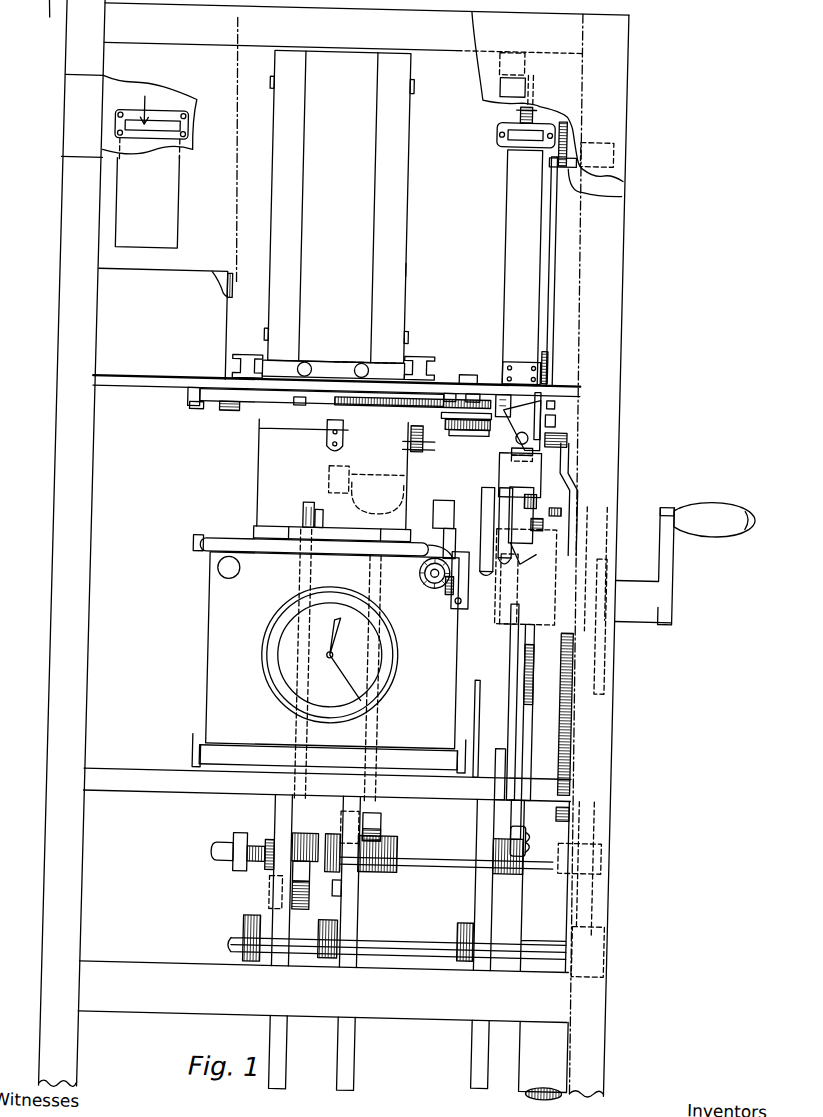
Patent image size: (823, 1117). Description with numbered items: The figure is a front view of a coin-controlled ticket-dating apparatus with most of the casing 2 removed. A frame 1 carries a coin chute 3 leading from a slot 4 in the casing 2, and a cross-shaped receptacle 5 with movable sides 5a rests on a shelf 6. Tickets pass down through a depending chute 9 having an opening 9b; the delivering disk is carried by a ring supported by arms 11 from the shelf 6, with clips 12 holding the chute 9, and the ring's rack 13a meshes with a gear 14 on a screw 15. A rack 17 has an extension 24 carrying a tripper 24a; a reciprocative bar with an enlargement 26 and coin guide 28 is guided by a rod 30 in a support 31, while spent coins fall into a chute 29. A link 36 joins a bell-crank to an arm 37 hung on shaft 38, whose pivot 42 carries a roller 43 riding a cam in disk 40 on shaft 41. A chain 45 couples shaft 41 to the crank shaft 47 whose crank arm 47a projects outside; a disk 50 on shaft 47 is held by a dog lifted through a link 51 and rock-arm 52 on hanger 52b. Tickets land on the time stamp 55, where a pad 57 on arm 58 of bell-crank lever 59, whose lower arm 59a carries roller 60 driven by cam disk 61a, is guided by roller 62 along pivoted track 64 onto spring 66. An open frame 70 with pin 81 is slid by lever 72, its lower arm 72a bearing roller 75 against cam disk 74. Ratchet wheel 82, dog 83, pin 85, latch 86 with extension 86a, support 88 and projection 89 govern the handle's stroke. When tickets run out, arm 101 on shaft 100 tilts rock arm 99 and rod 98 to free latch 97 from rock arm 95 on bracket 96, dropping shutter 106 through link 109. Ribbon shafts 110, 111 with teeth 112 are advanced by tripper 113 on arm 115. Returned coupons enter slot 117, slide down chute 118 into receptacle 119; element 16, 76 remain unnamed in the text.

The frame 1 is at (53, 243).
The casing 2 is at (624, 98).
The coin chute 3 is at (278, 193).
The slot 4 is at (500, 136).
The receptacle 5 is at (640, 382).
The movable side 5a is at (422, 268).
The shelf 6 is at (144, 393).
The guide or chute 9 is at (262, 482).
The opening 9b is at (329, 516).
The arms 11 is at (186, 404).
The clips 12 is at (346, 436).
The rack 13a is at (330, 396).
The gear 14 is at (448, 392).
The screw 15 is at (470, 392).
The lower rack 16 is at (480, 422).
The rack 17 is at (496, 434).
The extension 24 is at (541, 405).
The tripper 24a is at (556, 415).
The enlargement 26 is at (533, 445).
The guide 28 is at (533, 452).
The chute 29 is at (520, 475).
The extension or rod 30 is at (521, 425).
The support 31 is at (512, 407).
The link 36 is at (480, 720).
The arm 37 is at (522, 797).
The rod or shaft 38 is at (428, 857).
The disk 40 is at (483, 900).
The shaft 41 is at (390, 940).
The pivot 42 is at (532, 830).
The roller 43 is at (504, 872).
The chain 45 is at (536, 708).
The crank shaft 47 is at (642, 608).
The crank arm 47a is at (676, 540).
The disk 50 is at (578, 668).
The link 51 is at (575, 487).
The rock-arm 52 is at (562, 435).
The hanger 52b is at (549, 402).
The dating or time stamp 55 is at (332, 650).
The pad or hammer 57 is at (350, 496).
The arm 58 is at (327, 482).
The bell-crank lever 59 is at (381, 722).
The lower arm 59a is at (387, 820).
The roller 60 is at (369, 841).
The disk 61a is at (349, 888).
The roller 62 is at (428, 460).
The pivoted track or way 64 is at (453, 512).
The spring 66 is at (422, 553).
The open frame 70 is at (253, 535).
The bell-crank lever 72 is at (298, 725).
The lower arm 72a is at (318, 873).
The disk 74 is at (299, 1068).
The roller 75 is at (290, 892).
The shelf 76 is at (268, 555).
The pin 81 is at (302, 515).
The ratchet wheel 82 is at (536, 674).
The dog 83 is at (556, 530).
The projection or pin 85 is at (512, 680).
The latch 86 is at (527, 556).
The extension 86a is at (500, 556).
The support 88 is at (484, 500).
The projection 89 is at (526, 577).
The rock arm or bell-crank 95 is at (530, 116).
The bracket 96 is at (591, 191).
The latch 97 is at (570, 135).
The rod 98 is at (555, 251).
The rock arm 99 is at (543, 350).
The shaft 100 is at (465, 372).
The arm 101 is at (352, 362).
The drop-shutter 106 is at (489, 71).
The link 109 is at (517, 74).
The shaft 110 is at (216, 570).
The shaft 111 is at (432, 578).
The teeth 112 is at (438, 584).
The pawl or tripper 113 is at (431, 578).
The arm 115 is at (456, 552).
The slot 117 is at (160, 122).
The chute 118 is at (170, 205).
The receptacle 119 is at (169, 196).